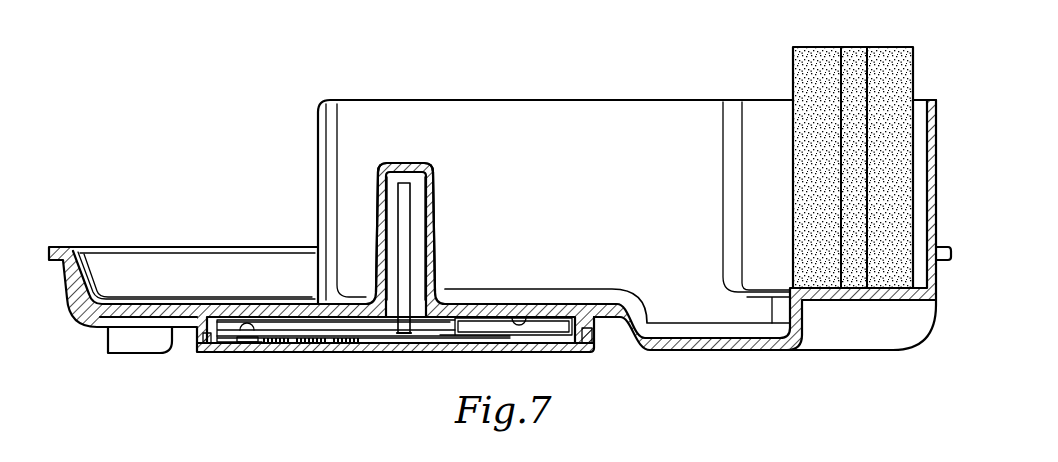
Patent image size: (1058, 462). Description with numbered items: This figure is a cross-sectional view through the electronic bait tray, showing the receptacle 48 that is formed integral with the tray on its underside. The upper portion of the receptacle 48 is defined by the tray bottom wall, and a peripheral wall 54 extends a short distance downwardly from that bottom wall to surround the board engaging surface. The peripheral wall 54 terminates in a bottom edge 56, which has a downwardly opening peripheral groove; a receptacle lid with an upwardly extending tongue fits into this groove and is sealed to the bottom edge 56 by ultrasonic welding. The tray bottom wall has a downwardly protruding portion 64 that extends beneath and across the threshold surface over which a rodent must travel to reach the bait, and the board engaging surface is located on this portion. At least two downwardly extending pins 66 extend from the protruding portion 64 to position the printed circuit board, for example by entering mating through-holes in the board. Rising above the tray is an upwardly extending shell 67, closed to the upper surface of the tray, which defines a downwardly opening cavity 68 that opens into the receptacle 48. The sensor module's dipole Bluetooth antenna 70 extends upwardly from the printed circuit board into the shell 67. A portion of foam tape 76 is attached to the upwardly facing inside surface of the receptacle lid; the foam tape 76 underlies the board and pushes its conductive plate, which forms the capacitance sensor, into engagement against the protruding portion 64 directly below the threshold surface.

The receptacle 48 is at (517, 321).
The peripheral wall 54 is at (598, 330).
The bottom edge 56 is at (192, 333).
The downwardly protruding portion 64 is at (292, 338).
The downwardly extending pins 66 is at (247, 338).
The shell 67 is at (434, 216).
The cavity 68 is at (415, 232).
The dipole Bluetooth antenna 70 is at (408, 197).
The foam tape 76 is at (329, 350).